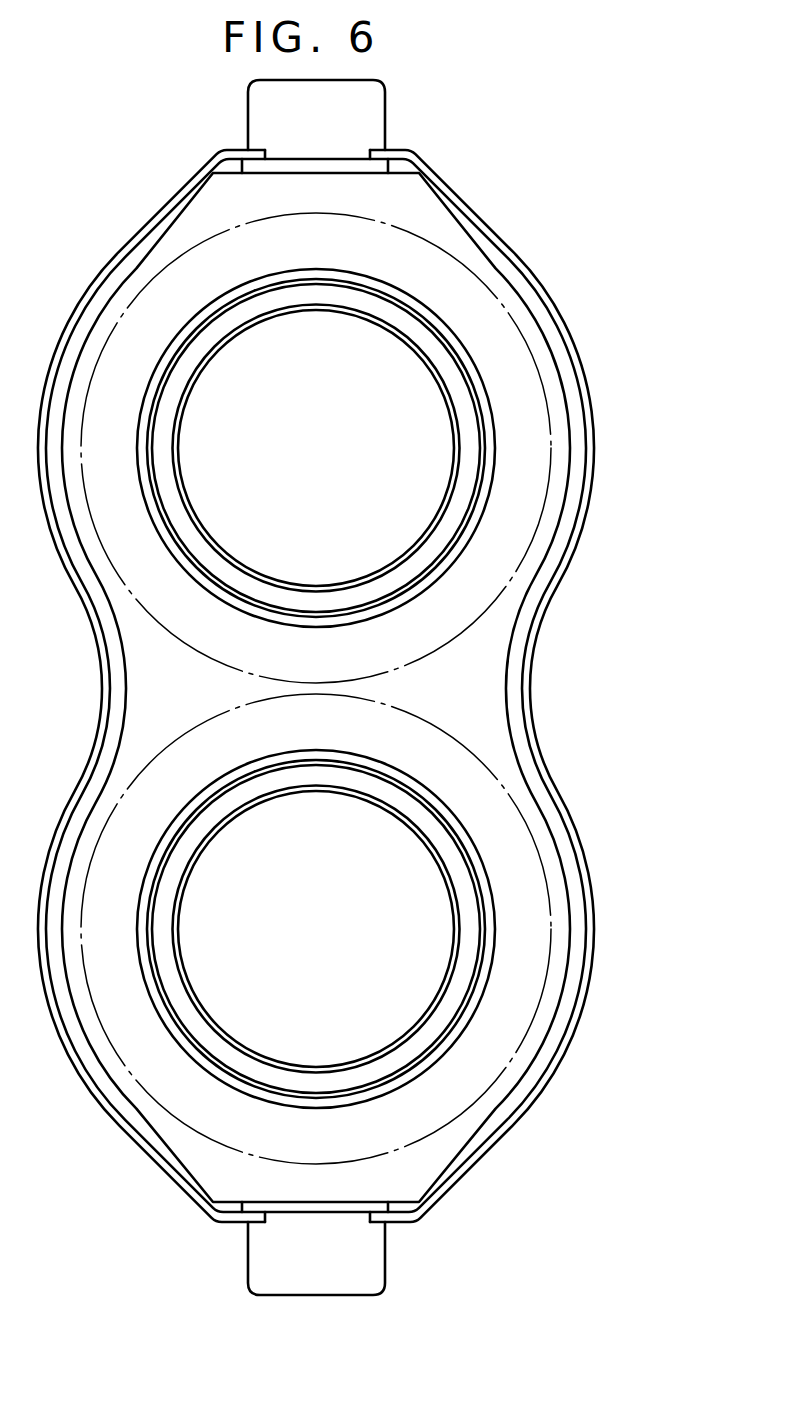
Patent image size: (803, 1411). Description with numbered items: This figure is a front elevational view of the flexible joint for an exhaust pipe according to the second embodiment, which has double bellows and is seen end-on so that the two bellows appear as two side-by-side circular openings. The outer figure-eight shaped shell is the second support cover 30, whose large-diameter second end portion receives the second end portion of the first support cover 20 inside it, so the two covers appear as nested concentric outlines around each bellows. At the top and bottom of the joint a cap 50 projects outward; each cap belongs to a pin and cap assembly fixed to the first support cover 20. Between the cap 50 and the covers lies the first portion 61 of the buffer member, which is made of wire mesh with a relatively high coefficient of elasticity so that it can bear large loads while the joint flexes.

The cap 50 is at (370, 100).
The first portion of the buffer member 61 is at (325, 165).
The second support cover 30 is at (498, 238).
The first support cover 20 is at (533, 553).